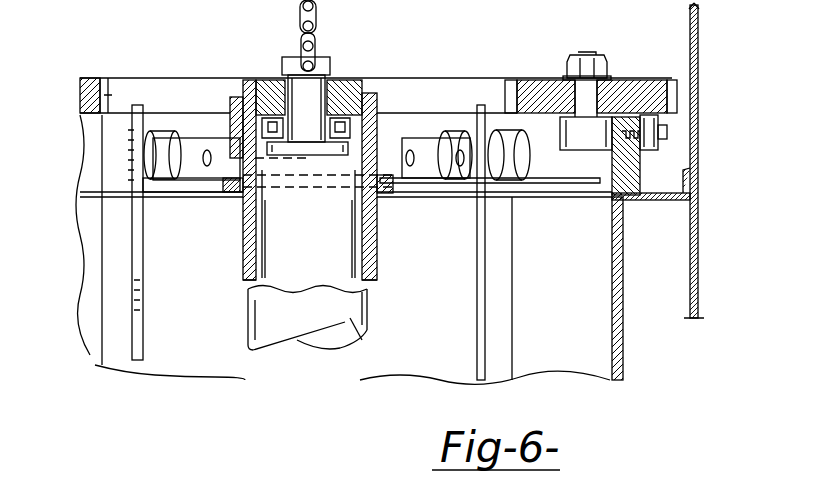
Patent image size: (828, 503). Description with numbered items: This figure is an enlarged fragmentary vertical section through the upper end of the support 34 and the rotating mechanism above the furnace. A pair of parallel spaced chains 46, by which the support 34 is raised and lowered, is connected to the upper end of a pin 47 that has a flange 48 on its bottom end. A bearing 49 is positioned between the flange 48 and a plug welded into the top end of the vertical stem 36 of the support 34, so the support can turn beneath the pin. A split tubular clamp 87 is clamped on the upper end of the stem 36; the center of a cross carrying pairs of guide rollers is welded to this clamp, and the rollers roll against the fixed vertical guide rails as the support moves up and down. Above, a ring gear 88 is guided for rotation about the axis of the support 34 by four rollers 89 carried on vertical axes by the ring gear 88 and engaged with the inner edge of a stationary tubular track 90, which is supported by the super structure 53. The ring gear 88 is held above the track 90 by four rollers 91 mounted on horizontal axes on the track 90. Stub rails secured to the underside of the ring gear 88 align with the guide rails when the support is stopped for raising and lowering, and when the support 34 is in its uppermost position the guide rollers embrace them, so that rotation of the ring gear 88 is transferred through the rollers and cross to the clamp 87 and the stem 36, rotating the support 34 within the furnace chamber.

The support 34 is at (380, 329).
The stem 36 is at (367, 297).
The chains 46 is at (318, 9).
The pin 47 is at (333, 78).
The flange 48 is at (327, 157).
The bearing 49 is at (270, 118).
The super structure 53 is at (712, 238).
The split tubular clamp 87 is at (373, 227).
The ring gear 88 is at (531, 80).
The rollers 89 is at (567, 150).
The tubular track 90 is at (612, 168).
The rollers 91 is at (647, 150).